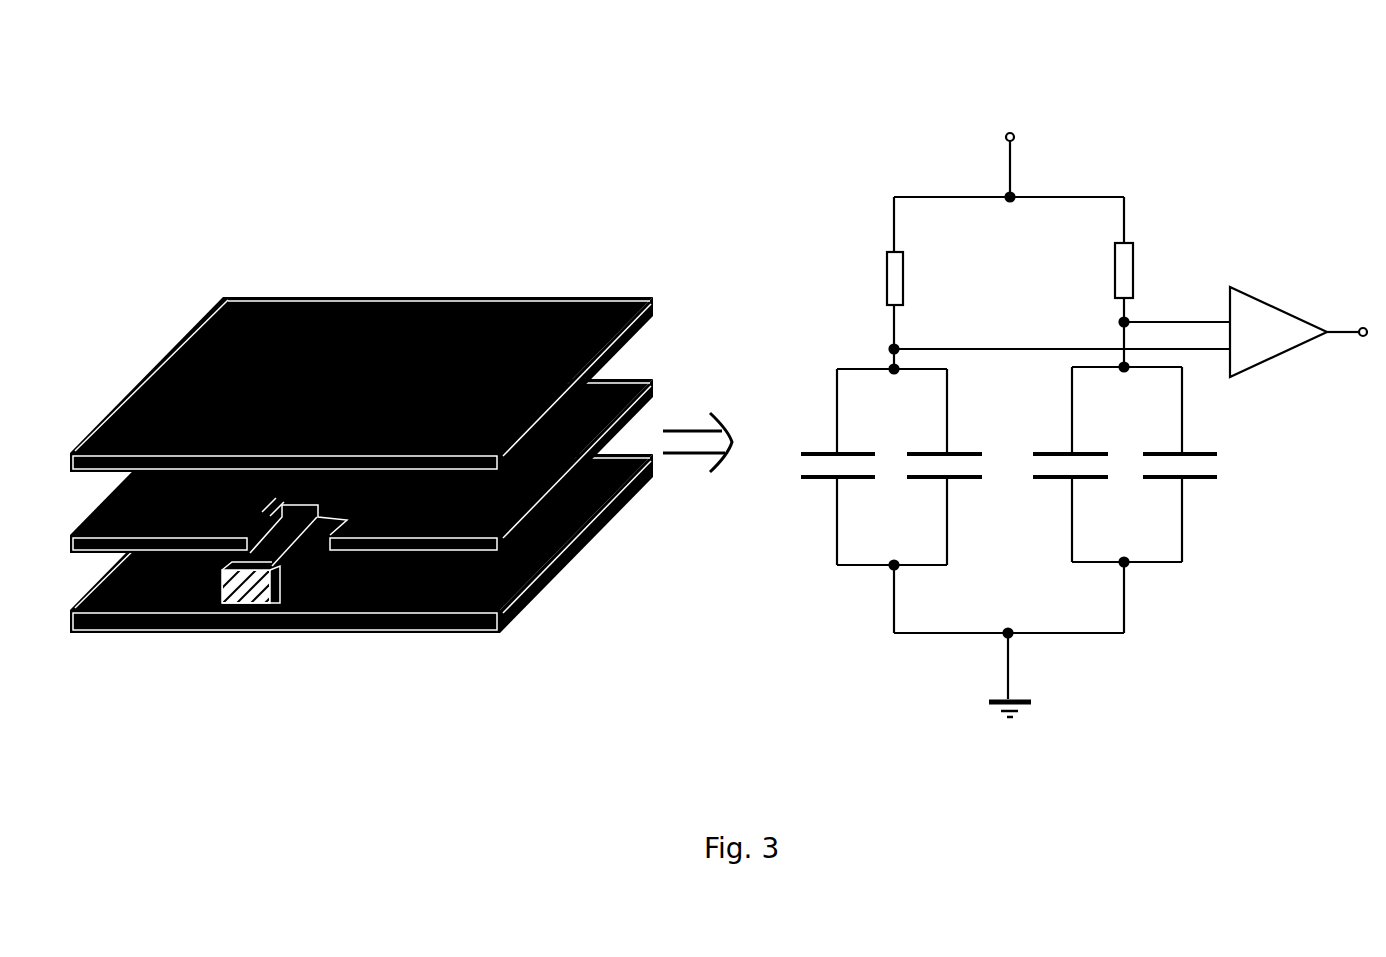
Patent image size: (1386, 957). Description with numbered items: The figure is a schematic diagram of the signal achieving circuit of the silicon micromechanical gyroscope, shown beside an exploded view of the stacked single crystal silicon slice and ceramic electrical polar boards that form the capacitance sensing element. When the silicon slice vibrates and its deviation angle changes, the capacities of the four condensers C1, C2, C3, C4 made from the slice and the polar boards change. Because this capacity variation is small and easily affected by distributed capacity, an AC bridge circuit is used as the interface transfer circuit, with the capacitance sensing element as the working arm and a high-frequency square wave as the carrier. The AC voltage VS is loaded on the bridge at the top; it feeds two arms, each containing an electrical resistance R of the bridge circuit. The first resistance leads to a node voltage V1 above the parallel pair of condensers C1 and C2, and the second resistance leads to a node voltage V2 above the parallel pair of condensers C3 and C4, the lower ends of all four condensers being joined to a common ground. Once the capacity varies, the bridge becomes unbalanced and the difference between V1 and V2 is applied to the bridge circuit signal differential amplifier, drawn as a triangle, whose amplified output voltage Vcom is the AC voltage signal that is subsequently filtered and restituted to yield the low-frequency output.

The AC voltage VS is at (1000, 140).
The electrical resistance R is at (1025, 273).
The bridge node voltage V1 is at (1033, 339).
The bridge node voltage V2 is at (1146, 331).
The condenser C1 is at (831, 467).
The condenser C2 is at (955, 467).
The condenser C3 is at (1061, 464).
The condenser C4 is at (1189, 464).
The output voltage Vcom is at (1305, 323).